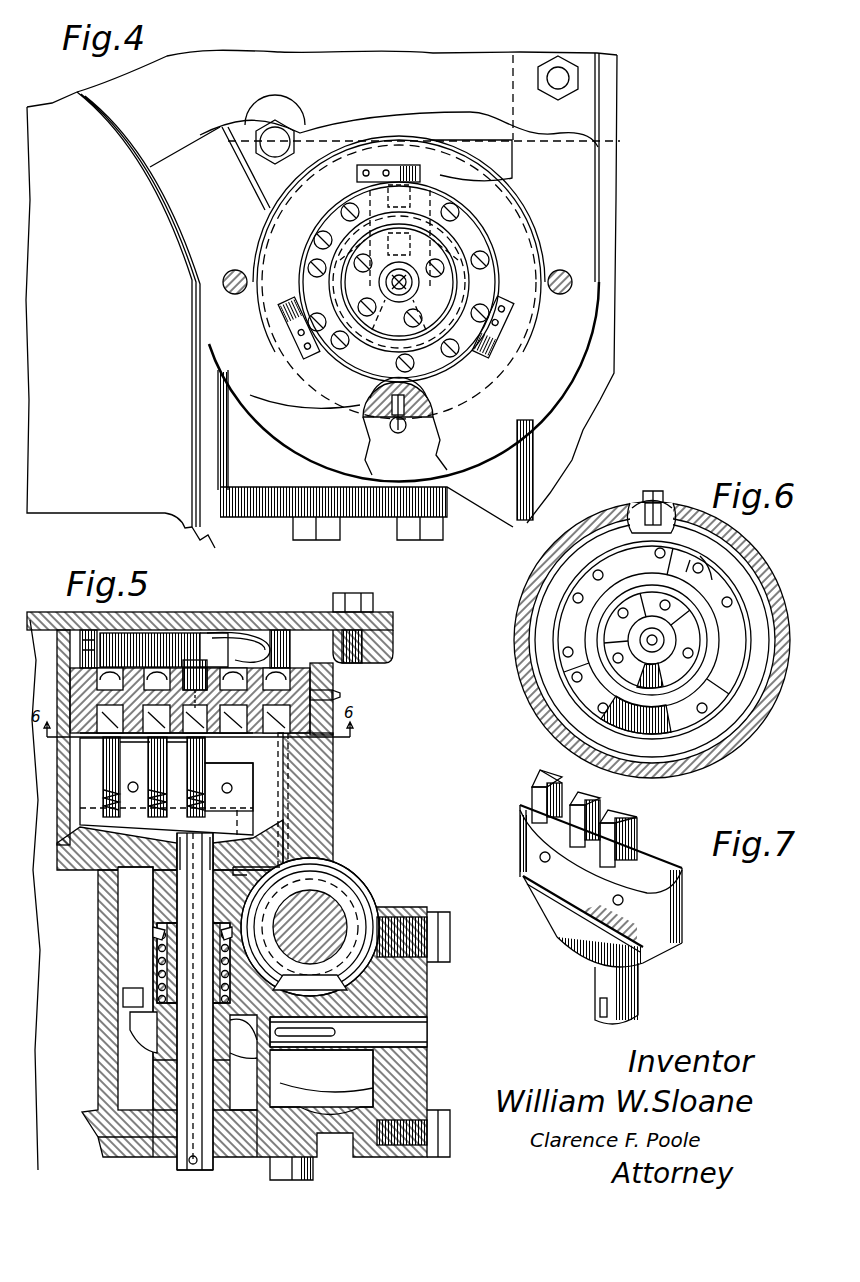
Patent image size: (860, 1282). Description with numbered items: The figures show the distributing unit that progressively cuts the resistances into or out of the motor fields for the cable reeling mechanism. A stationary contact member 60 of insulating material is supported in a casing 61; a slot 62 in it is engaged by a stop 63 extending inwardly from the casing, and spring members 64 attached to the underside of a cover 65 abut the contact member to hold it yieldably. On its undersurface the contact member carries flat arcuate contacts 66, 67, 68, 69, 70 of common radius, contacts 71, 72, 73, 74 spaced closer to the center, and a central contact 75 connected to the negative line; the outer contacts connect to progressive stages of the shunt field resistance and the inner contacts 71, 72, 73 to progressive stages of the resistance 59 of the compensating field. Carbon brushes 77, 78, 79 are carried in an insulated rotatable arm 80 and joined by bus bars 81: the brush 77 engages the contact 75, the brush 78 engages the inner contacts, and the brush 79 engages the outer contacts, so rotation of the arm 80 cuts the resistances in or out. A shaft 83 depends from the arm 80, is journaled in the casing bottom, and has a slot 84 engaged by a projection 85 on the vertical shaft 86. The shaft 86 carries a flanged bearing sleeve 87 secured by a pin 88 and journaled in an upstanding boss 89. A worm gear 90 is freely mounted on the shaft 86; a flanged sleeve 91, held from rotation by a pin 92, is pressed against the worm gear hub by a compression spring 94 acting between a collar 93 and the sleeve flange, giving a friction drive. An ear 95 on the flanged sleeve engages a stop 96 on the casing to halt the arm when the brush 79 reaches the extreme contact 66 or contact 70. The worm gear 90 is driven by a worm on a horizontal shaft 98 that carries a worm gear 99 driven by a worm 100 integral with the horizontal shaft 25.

In FIG. 5, the horizontal shaft 25 is at (330, 900).
In FIG. 4, the resistance 59 is at (498, 245).
In FIG. 5, the resistance 59 is at (302, 625).
In FIG. 4, the stationary contact member 60 is at (500, 385).
In FIG. 5, the stationary contact member 60 is at (160, 670).
In FIG. 6, the stationary contact member 60 is at (632, 520).
In FIG. 4, the casing 61 is at (600, 280).
In FIG. 5, the casing 61 is at (340, 672).
In FIG. 6, the casing 61 is at (528, 598).
In FIG. 4, the slot 62 is at (406, 425).
In FIG. 5, the slot 62 is at (335, 740).
In FIG. 6, the slot 62 is at (670, 470).
In FIG. 4, the stop 63 is at (388, 430).
In FIG. 5, the stop 63 is at (342, 694).
In FIG. 6, the stop 63 is at (640, 503).
In FIG. 4, the spring members 64 is at (410, 166).
In FIG. 5, the spring members 64 is at (90, 652).
In FIG. 5, the cover 65 is at (235, 632).
In FIG. 6, the contact 66 is at (745, 740).
In FIG. 6, the contact 67 is at (740, 545).
In FIG. 6, the contact 68 is at (600, 548).
In FIG. 6, the contact 69 is at (556, 633).
In FIG. 6, the contact 70 is at (555, 690).
In FIG. 6, the contact 71 is at (740, 700).
In FIG. 6, the contact 72 is at (686, 560).
In FIG. 6, the contact 73 is at (610, 615).
In FIG. 6, the contact 74 is at (620, 655).
In FIG. 5, the contact 75 is at (262, 733).
In FIG. 6, the contact 75 is at (652, 664).
In FIG. 4, the brush 77 is at (415, 282).
In FIG. 5, the brush 77 is at (210, 778).
In FIG. 7, the brush 77 is at (625, 812).
In FIG. 4, the brush 78 is at (410, 244).
In FIG. 5, the brush 78 is at (160, 798).
In FIG. 7, the brush 78 is at (592, 797).
In FIG. 4, the brush 79 is at (410, 190).
In FIG. 5, the brush 79 is at (115, 800).
In FIG. 7, the brush 79 is at (550, 775).
In FIG. 4, the rotatable arm 80 is at (430, 192).
In FIG. 5, the rotatable arm 80 is at (260, 790).
In FIG. 7, the rotatable arm 80 is at (690, 910).
In FIG. 5, the bus bars 81 is at (210, 738).
In FIG. 7, the bus bars 81 is at (615, 898).
In FIG. 5, the shaft 83 is at (215, 865).
In FIG. 7, the shaft 83 is at (640, 995).
In FIG. 7, the slot 84 is at (600, 1012).
In FIG. 5, the projection 85 is at (153, 898).
In FIG. 5, the vertical shaft 86 is at (165, 1155).
In FIG. 5, the flanged bearing sleeve 87 is at (240, 1140).
In FIG. 5, the pin 88 is at (194, 1012).
In FIG. 5, the upstanding boss 89 is at (103, 1155).
In FIG. 5, the worm gear 90 is at (268, 1160).
In FIG. 5, the flanged sleeve 91 is at (158, 962).
In FIG. 5, the pin 92 is at (153, 932).
In FIG. 5, the collar 93 is at (150, 942).
In FIG. 5, the compression spring 94 is at (123, 998).
In FIG. 5, the ear 95 is at (230, 1030).
In FIG. 5, the stop 96 is at (135, 1015).
In FIG. 5, the horizontal shaft 98 is at (427, 1032).
In FIG. 5, the worm gear 99 is at (360, 1090).
In FIG. 5, the worm 100 is at (347, 972).